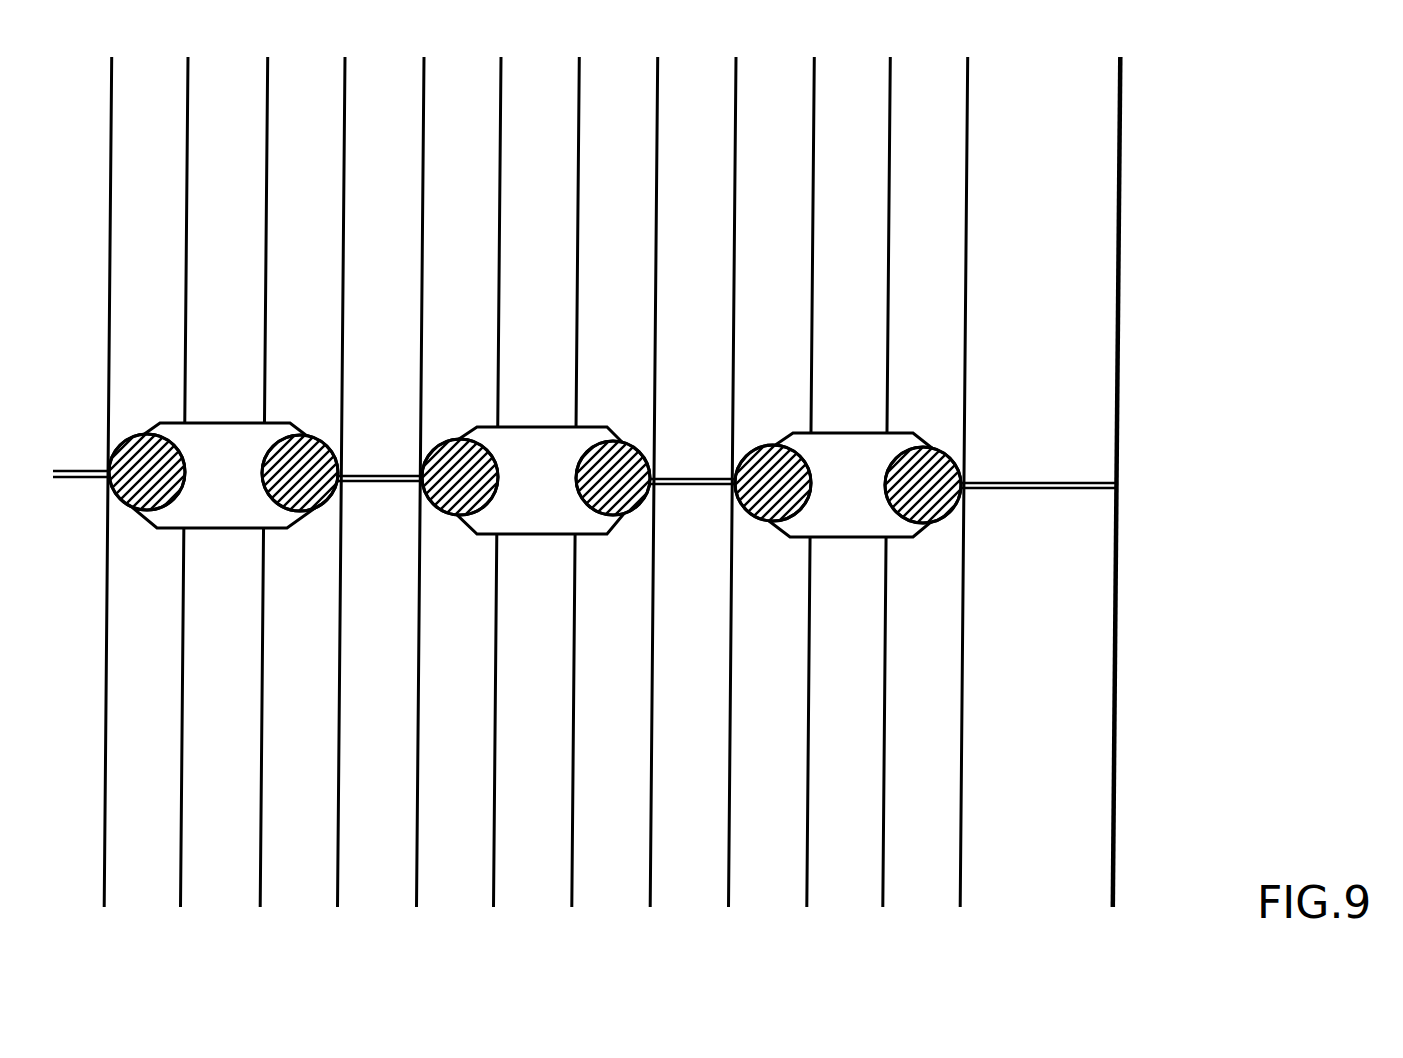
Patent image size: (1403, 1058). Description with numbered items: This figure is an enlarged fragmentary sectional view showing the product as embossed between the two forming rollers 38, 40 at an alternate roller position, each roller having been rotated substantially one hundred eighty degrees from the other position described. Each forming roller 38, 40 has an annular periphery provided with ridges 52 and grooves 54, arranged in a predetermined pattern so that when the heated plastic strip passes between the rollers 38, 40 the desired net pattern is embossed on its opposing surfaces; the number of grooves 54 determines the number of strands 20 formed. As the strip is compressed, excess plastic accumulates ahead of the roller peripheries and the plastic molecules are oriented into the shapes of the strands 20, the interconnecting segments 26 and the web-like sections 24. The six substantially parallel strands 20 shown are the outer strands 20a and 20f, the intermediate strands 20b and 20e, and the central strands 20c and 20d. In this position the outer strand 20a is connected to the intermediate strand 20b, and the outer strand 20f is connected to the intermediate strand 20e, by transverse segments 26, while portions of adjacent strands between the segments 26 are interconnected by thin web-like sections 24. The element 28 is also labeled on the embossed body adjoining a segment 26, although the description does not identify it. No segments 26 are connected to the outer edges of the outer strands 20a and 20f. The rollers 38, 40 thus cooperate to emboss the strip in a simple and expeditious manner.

The strands 20 is at (750, 456).
The outer strand 20a is at (140, 508).
The intermediate strand 20b is at (318, 508).
The central strand 20c is at (437, 497).
The central strand 20d is at (625, 510).
The intermediate strand 20e is at (743, 498).
The outer strand 20f is at (952, 502).
The web-like sections 24 is at (380, 474).
The segments 26 is at (473, 426).
The housing cover 28 is at (533, 428).
The forming roller 38 is at (1122, 408).
The forming roller 40 is at (1122, 633).
The ridges 52 is at (398, 666).
The grooves 54 is at (307, 622).